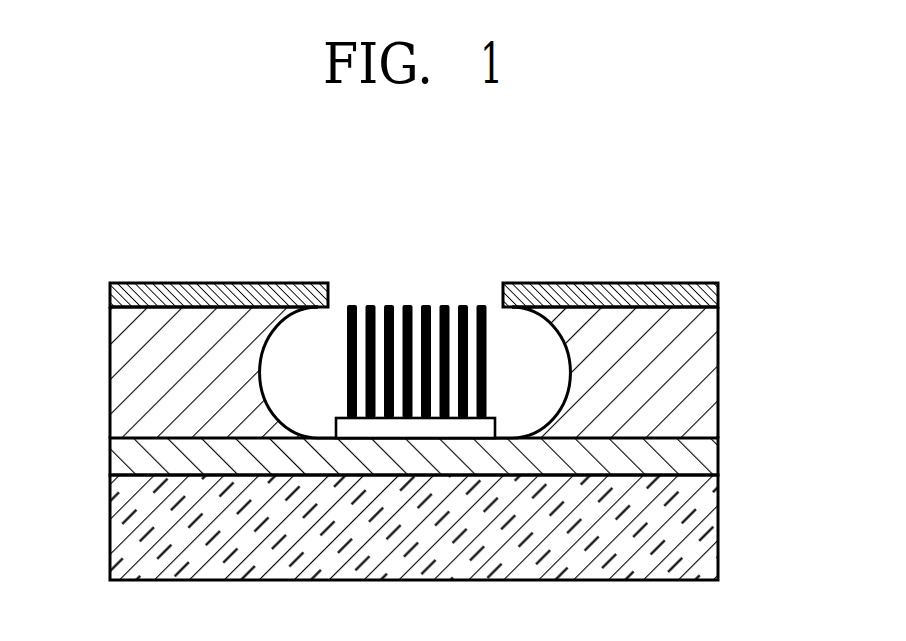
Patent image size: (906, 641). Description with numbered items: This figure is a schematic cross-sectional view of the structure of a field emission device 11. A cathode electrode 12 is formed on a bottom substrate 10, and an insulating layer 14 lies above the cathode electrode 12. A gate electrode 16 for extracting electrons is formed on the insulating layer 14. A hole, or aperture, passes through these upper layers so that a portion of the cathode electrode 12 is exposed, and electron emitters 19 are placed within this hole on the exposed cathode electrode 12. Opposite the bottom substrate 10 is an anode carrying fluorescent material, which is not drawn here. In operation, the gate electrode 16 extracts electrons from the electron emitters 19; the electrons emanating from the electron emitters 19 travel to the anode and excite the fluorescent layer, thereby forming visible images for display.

The bottom substrate 10 is at (706, 531).
The field emission device 11 is at (82, 147).
The cathode electrode 12 is at (706, 461).
The insulating layer 14 is at (125, 380).
The gate electrode 16 is at (110, 294).
The electron emitters 19 is at (400, 318).